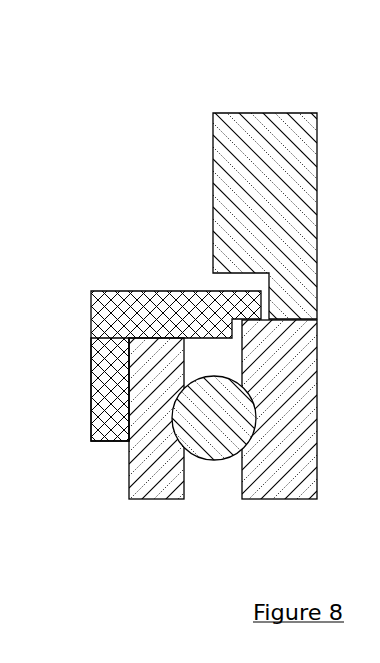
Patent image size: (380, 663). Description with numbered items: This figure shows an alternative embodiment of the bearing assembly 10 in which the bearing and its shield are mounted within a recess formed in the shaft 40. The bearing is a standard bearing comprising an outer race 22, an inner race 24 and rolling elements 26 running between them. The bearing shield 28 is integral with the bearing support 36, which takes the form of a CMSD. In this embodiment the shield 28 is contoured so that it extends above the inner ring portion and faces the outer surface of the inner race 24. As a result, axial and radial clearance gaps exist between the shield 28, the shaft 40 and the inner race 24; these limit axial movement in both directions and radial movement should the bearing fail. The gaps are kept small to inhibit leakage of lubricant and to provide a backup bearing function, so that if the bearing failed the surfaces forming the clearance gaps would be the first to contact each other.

The seal assembly 10 is at (182, 310).
The outer race 22 is at (140, 480).
The inner race 24 is at (280, 427).
The rolling elements 26 is at (214, 405).
The bearing shield 28 is at (153, 300).
The bearing support 36 is at (107, 417).
The shaft 40 is at (267, 162).